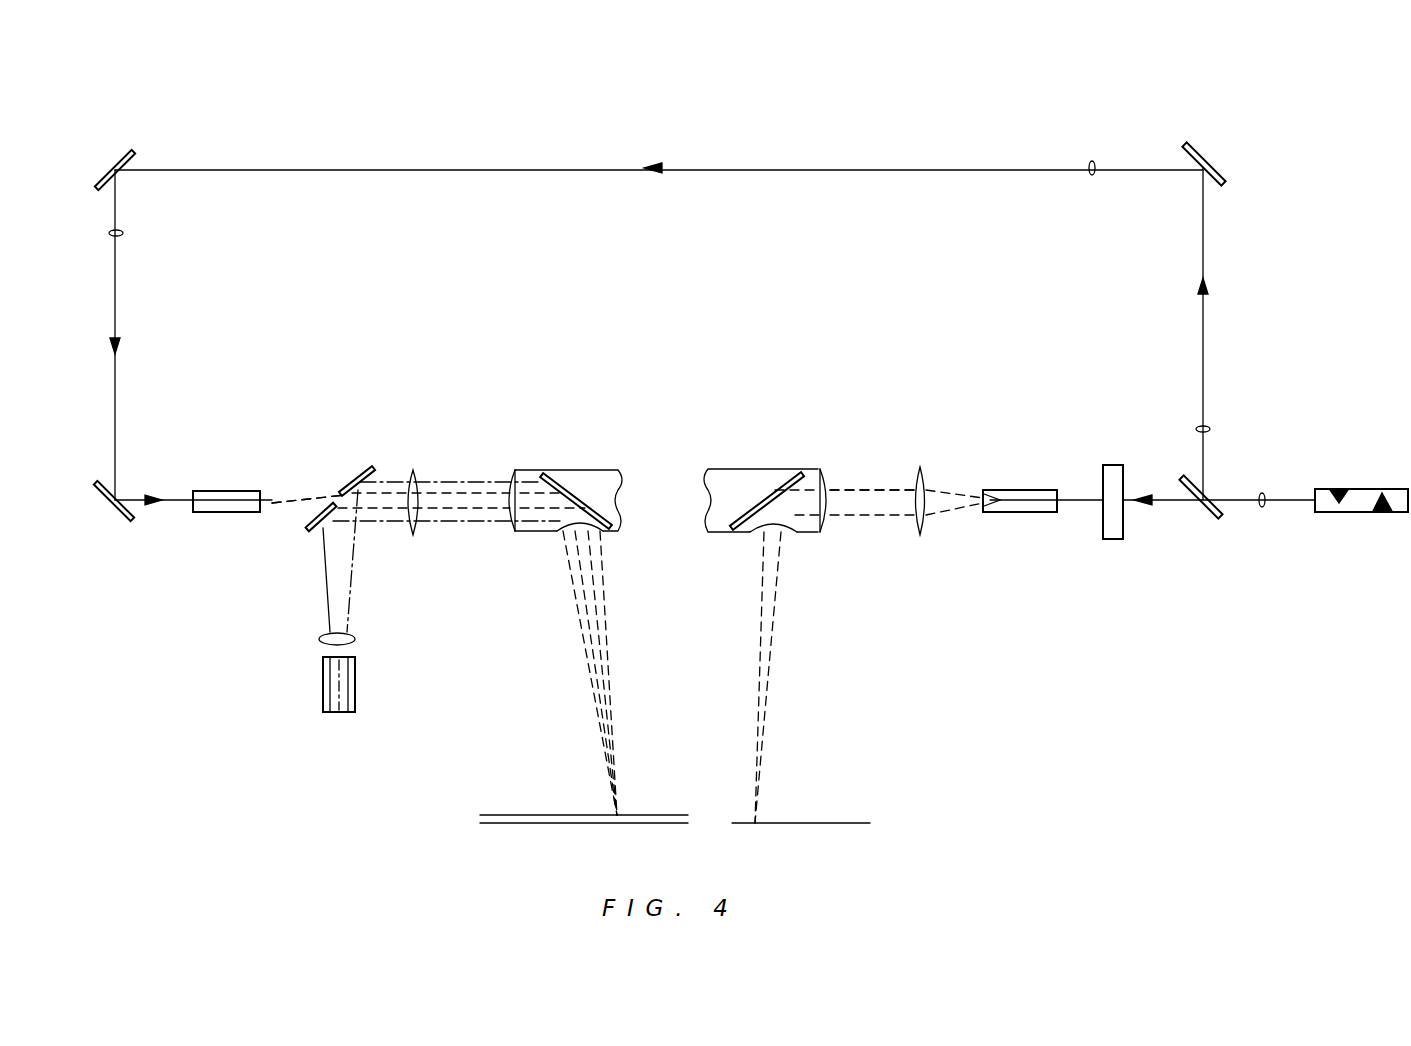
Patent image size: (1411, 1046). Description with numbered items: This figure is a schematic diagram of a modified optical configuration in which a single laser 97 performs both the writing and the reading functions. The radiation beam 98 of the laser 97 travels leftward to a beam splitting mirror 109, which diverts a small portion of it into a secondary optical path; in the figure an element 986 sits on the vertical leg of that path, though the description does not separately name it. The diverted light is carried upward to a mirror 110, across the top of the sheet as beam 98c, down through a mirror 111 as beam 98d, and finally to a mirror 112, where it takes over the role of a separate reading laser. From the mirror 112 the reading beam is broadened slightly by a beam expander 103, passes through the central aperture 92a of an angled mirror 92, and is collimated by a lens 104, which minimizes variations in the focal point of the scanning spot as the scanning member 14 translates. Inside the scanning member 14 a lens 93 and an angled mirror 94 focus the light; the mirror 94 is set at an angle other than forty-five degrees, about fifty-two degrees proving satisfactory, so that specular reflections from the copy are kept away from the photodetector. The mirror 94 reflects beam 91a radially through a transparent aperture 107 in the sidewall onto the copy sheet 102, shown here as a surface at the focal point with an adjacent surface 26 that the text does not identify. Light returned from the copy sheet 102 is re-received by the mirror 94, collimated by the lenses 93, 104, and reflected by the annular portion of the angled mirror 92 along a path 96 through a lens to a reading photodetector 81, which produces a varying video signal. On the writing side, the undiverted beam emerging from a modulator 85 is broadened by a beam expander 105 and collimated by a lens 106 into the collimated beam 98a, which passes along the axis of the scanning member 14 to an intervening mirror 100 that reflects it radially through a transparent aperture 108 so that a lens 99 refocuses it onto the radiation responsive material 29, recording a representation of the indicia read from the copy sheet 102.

The scanning member 14 is at (616, 470).
The wafer surface 26 is at (688, 798).
The radiation responsive material 29 is at (826, 823).
The reading photodetector 81 is at (323, 686).
The modulator 85 is at (1128, 440).
The beam 91a is at (465, 512).
The angled mirror 92 is at (366, 470).
The central aperture 92a is at (343, 494).
The lens 93 is at (510, 470).
The angled mirror 94 is at (574, 484).
The path 96 is at (319, 640).
The laser 97 is at (1360, 470).
The radiation beam 98 is at (1272, 472).
The collimated beam 98a is at (900, 514).
The beam 98c is at (1119, 198).
The beam 98d is at (157, 229).
The lens 986 is at (1210, 428).
The lens 99 is at (827, 474).
The intervening mirror 100 is at (784, 478).
The copy sheet 102 is at (532, 824).
The beam expander 103 is at (236, 476).
The lens 104 is at (418, 468).
The beam expander 105 is at (1002, 490).
The lens 106 is at (922, 468).
The transparent aperture 107 is at (606, 532).
The transparent aperture 108 is at (793, 535).
The beam splitting mirror 109 is at (1210, 512).
The mirror 110 is at (1216, 176).
The mirror 111 is at (103, 160).
The mirror 112 is at (108, 506).